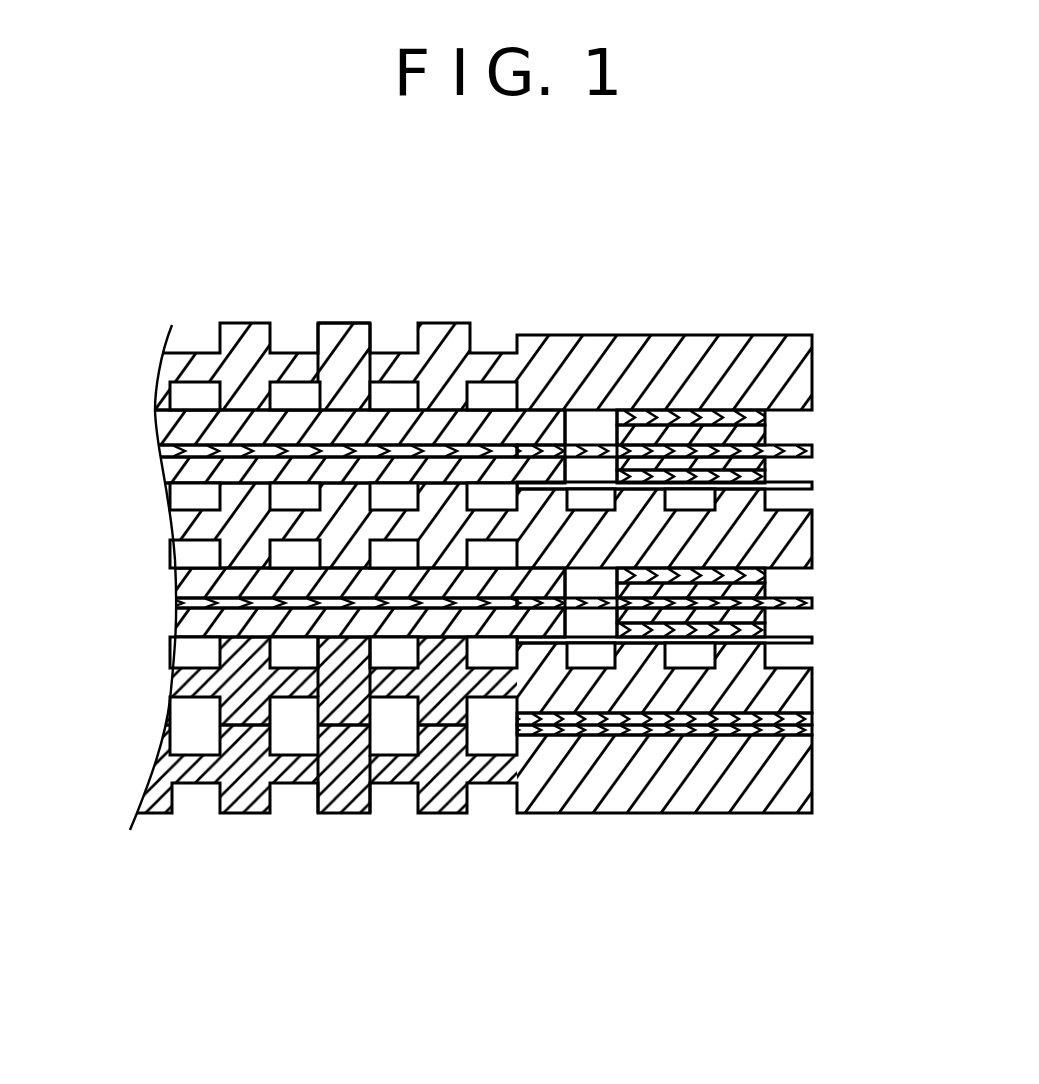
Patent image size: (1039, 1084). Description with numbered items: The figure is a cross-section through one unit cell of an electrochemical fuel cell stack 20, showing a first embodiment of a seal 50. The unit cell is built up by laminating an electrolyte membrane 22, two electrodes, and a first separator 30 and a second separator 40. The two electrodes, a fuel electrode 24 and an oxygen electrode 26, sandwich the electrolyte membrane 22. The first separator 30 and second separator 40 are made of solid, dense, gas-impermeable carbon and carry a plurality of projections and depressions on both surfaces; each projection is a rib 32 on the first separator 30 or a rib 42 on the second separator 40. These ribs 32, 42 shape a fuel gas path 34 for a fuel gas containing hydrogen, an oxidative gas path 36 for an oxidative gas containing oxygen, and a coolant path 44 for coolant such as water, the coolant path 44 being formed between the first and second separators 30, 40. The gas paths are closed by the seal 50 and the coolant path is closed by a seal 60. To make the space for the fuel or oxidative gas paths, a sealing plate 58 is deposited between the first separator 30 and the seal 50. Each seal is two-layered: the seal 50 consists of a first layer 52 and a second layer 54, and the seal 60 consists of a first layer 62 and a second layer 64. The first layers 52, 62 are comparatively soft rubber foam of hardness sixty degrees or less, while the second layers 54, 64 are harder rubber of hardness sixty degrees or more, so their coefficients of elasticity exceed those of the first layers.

The electrochemical fuel cell stack 20 is at (875, 288).
The electrolyte membrane 22 is at (800, 449).
The fuel electrode 24 is at (570, 478).
The oxygen electrode 26 is at (580, 432).
The first separator 30 is at (800, 537).
The rib 32 is at (330, 710).
The fuel gas path 34 is at (393, 495).
The oxidative gas path 36 is at (395, 553).
The second separator 40 is at (815, 352).
The rib 42 is at (332, 402).
The coolant path 44 is at (478, 800).
The seal 50 is at (589, 516).
The first layer 52 is at (767, 417).
The second layer 54 is at (767, 430).
The sealing plate 58 is at (800, 485).
The seal 60 is at (775, 778).
The first layer 62 is at (810, 718).
The second layer 64 is at (810, 729).